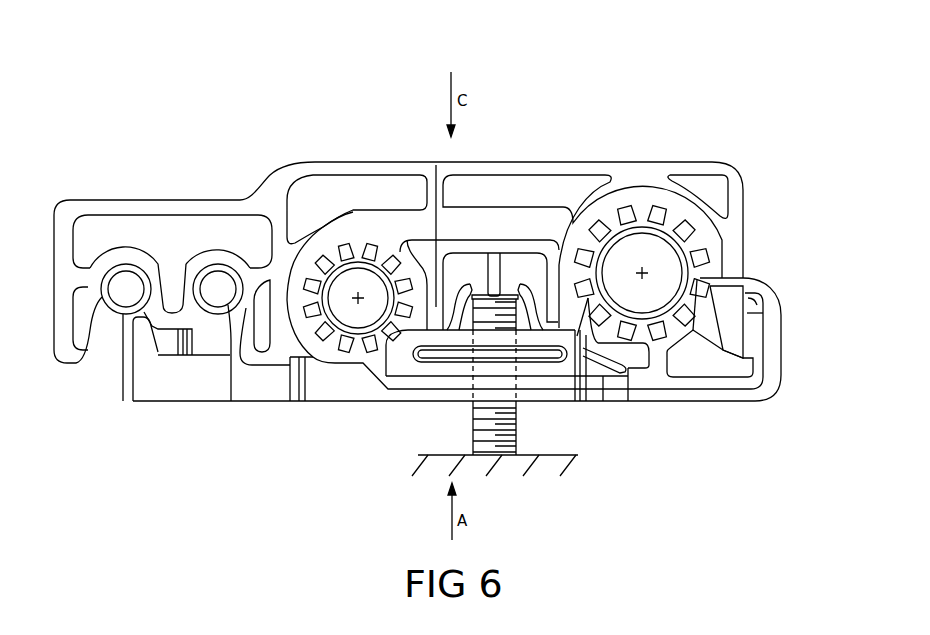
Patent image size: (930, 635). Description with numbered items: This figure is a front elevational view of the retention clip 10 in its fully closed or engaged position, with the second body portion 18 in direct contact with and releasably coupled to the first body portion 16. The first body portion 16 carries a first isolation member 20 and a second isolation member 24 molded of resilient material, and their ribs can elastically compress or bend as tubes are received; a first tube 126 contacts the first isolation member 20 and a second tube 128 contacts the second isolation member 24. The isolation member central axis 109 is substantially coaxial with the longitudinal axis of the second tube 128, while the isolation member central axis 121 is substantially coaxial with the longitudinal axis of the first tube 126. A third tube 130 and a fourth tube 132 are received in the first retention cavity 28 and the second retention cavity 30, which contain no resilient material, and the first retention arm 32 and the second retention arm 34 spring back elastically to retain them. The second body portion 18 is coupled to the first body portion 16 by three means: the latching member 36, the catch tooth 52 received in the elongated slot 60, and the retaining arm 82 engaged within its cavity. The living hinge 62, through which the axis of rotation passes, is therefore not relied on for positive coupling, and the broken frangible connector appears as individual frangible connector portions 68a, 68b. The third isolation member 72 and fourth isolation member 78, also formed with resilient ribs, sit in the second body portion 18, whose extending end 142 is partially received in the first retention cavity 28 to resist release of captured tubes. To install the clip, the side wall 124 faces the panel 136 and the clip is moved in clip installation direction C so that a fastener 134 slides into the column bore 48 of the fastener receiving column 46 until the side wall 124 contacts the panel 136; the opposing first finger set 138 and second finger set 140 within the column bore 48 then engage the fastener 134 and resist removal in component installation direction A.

The retention clip 10 is at (535, 105).
The first body portion 16 is at (567, 167).
The second body portion 18 is at (680, 398).
The first isolation member 20 is at (353, 291).
The second isolation member 24 is at (660, 162).
The first retention cavity 28 is at (88, 267).
The second retention cavity 30 is at (187, 292).
The first retention arm 32 is at (110, 325).
The second retention arm 34 is at (240, 328).
The latching member 36 is at (172, 350).
The fastener receiving column 46 is at (436, 165).
The column bore 48 is at (533, 307).
The catch tooth 52 is at (497, 353).
The elongated slot 60 is at (465, 353).
The living hinge 62 is at (768, 295).
The frangible connector portion 68a is at (750, 297).
The frangible connector portion 68b is at (762, 308).
The third isolation member 72 is at (658, 350).
The fourth isolation member 78 is at (358, 362).
The retaining arm 82 is at (748, 347).
The isolation member central axis 109 is at (648, 272).
The isolation member central axis 121 is at (287, 193).
The side wall 124 is at (368, 405).
The first tube 126 is at (292, 355).
The second tube 128 is at (577, 335).
The third tube 130 is at (88, 358).
The fourth tube 132 is at (218, 262).
The fastener 134 is at (473, 430).
The panel 136 is at (560, 453).
The first finger set 138 is at (468, 288).
The second finger set 140 is at (640, 203).
The extending end 142 is at (140, 338).